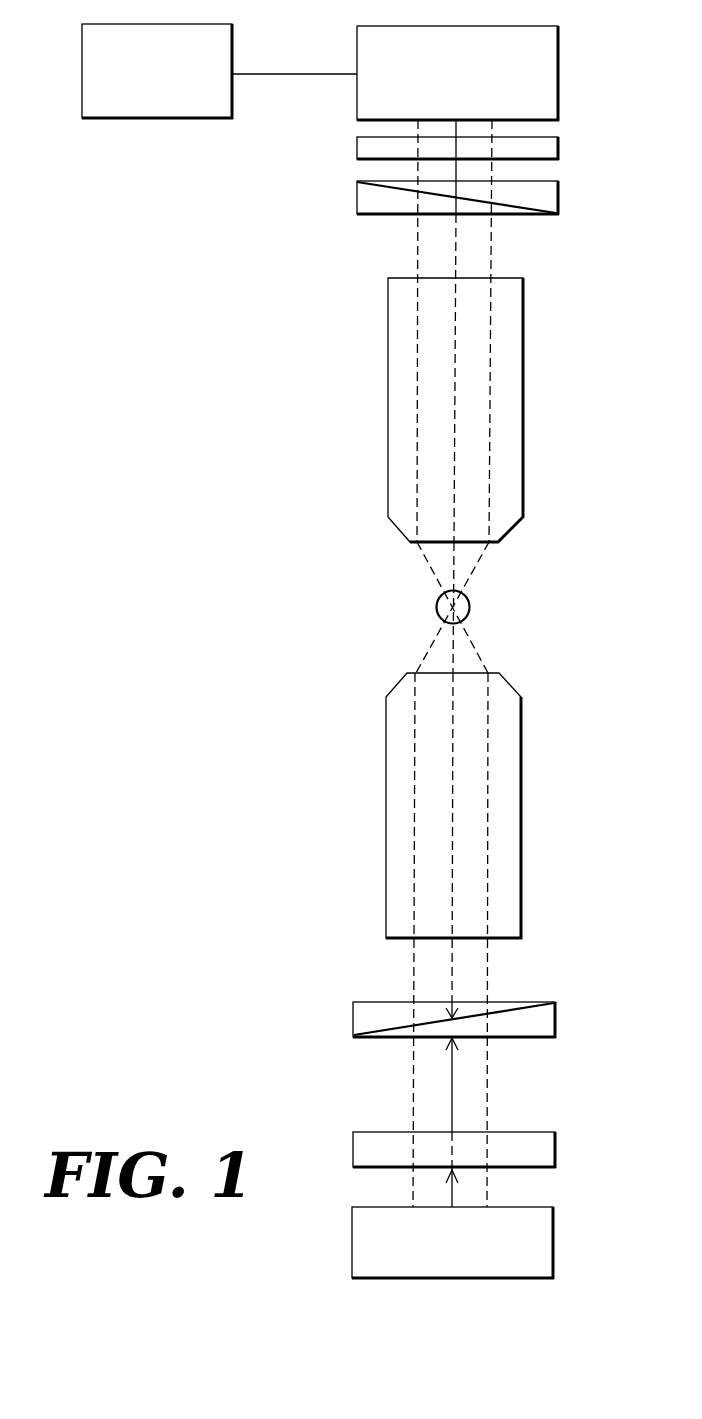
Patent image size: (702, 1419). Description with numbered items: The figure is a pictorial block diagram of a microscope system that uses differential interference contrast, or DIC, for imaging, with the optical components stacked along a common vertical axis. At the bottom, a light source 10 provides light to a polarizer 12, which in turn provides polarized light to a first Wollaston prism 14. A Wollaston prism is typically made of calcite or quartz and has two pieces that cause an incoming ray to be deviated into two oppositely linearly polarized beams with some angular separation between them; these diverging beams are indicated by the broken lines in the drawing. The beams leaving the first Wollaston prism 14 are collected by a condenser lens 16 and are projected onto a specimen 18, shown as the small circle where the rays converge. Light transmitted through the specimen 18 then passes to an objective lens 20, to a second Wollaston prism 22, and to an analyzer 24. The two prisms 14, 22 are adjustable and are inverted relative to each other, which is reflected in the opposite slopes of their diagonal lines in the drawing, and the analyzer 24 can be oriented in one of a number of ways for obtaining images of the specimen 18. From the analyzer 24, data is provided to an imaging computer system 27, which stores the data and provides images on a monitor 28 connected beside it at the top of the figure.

The light source 10 is at (553, 1211).
The polarizer 12 is at (533, 1132).
The first Wollaston prism 14 is at (535, 1003).
The condenser lens 16 is at (521, 784).
The specimen 18 is at (469, 607).
The objective lens 20 is at (523, 348).
The second Wollaston prism 22 is at (558, 201).
The analyzer 24 is at (558, 150).
The imaging computer system 27 is at (558, 58).
The monitor 28 is at (165, 24).